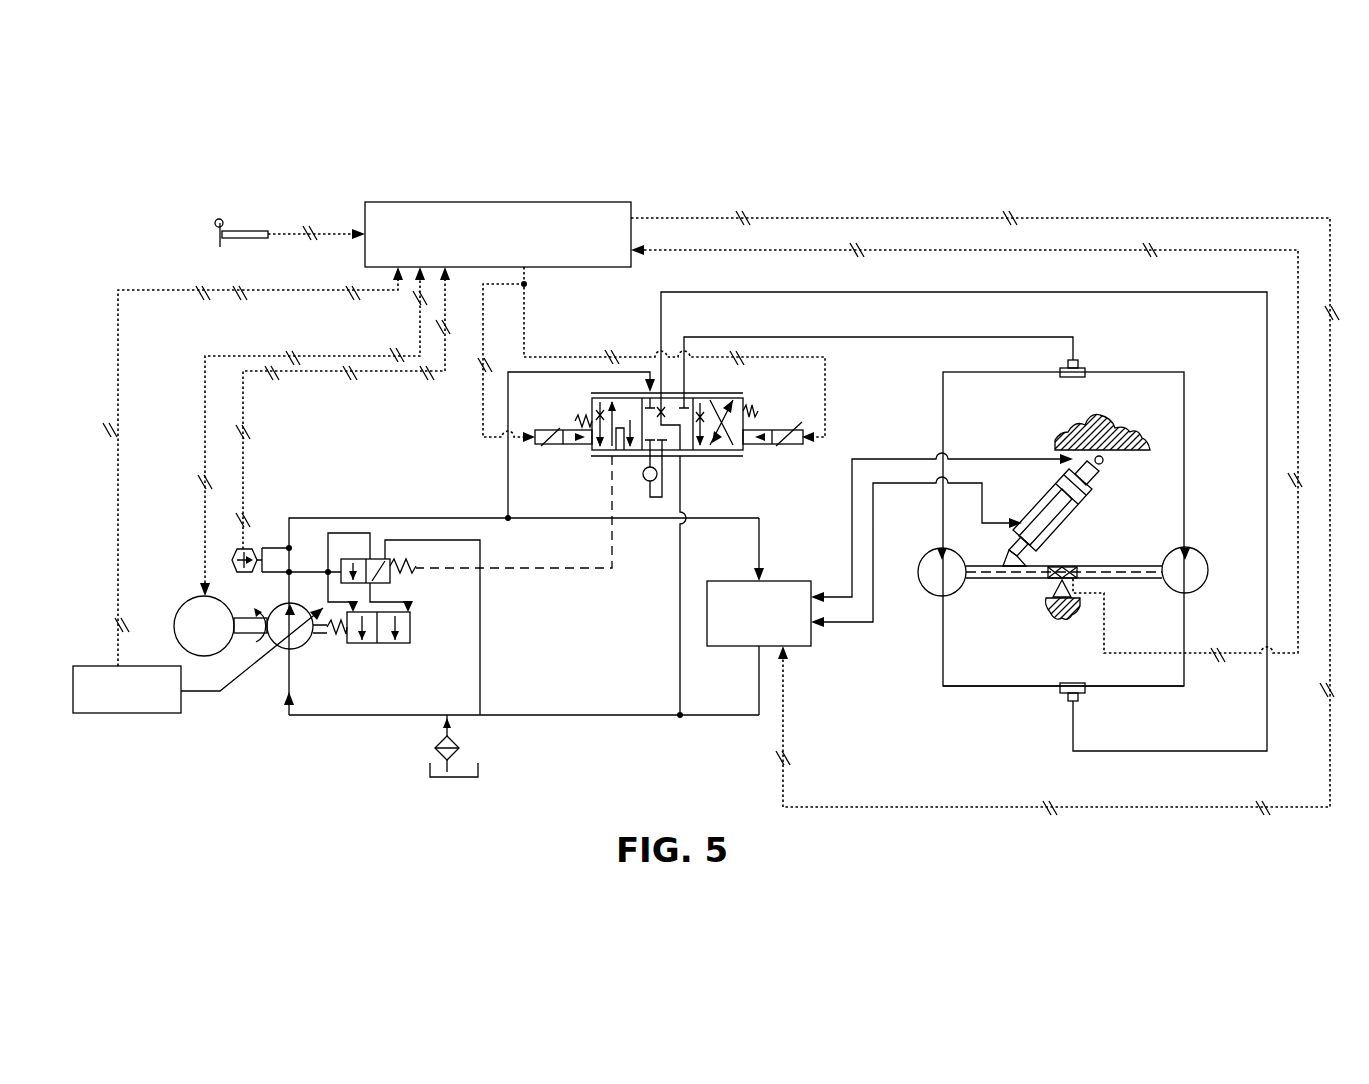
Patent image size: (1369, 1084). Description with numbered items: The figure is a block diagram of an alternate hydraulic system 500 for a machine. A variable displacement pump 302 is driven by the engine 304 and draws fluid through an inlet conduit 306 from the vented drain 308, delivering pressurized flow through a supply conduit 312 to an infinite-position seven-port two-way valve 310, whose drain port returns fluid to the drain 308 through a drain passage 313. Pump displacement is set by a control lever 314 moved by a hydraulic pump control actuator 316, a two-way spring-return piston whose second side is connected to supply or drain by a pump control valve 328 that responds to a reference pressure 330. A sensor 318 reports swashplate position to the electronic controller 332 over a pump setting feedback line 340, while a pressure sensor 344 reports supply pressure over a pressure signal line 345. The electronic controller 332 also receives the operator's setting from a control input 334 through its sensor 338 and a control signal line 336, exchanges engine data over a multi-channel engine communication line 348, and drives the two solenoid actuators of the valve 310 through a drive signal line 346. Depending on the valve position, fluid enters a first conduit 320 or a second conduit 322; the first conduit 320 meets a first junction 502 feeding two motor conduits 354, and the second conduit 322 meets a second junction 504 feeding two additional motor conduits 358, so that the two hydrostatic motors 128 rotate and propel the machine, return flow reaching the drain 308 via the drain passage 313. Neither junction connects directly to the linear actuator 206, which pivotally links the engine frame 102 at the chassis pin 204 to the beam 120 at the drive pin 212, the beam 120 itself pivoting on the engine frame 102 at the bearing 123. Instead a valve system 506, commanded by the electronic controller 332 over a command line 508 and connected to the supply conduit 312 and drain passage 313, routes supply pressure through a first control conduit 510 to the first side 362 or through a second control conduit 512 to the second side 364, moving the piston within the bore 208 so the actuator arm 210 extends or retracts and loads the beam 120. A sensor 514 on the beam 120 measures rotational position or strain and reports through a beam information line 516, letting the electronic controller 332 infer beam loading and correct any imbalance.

The hydraulic system 500 is at (172, 232).
The electronic controller 332 is at (570, 202).
The control input 334 is at (220, 222).
The sensor 338 is at (240, 232).
The control signal line 336 is at (328, 235).
The pump setting feedback line 340 is at (142, 290).
The multi-channel engine communication line 348 is at (205, 413).
The pressure signal line 345 is at (370, 373).
The drive signal line 346 is at (532, 357).
The command line 508 is at (862, 216).
The beam information line 516 is at (925, 252).
The first conduit 320 is at (760, 292).
The second conduit 322 is at (800, 336).
The 7-2 valve 310 is at (698, 464).
The supply conduit 312 is at (330, 517).
The inlet conduit 306 is at (380, 713).
The drain passage 313 is at (480, 623).
The reference pressure 330 is at (510, 568).
The pressure sensor 344 is at (231, 560).
The engine 304 is at (187, 608).
The pump 302 is at (300, 633).
The control lever 314 is at (218, 697).
The sensor 318 is at (135, 713).
The hydraulic pump control actuator 316 is at (378, 647).
The pump control valve 328 is at (397, 580).
The drain 308 is at (487, 764).
The drive pin 212 is at (760, 540).
The valve system 506 is at (798, 648).
The first control conduit 510 is at (860, 460).
The second control conduit 512 is at (876, 538).
The additional motor conduits 358 is at (955, 372).
The hydrostatic motors 128 is at (925, 590).
The beam 120 is at (1145, 568).
The second junction 504 is at (1083, 370).
The first junction 502 is at (1088, 703).
The motor conduits 354 is at (957, 688).
The sensor 514 is at (1075, 579).
The bearing 123 is at (1050, 593).
The engine frame 102 is at (1112, 418).
The linear actuator 206 is at (1005, 452).
The bore 208 is at (1078, 509).
The actuator arm 210 is at (1055, 497).
The first side 362 is at (1103, 485).
The chassis pin 204 is at (1107, 459).
The second side 364 is at (1058, 532).